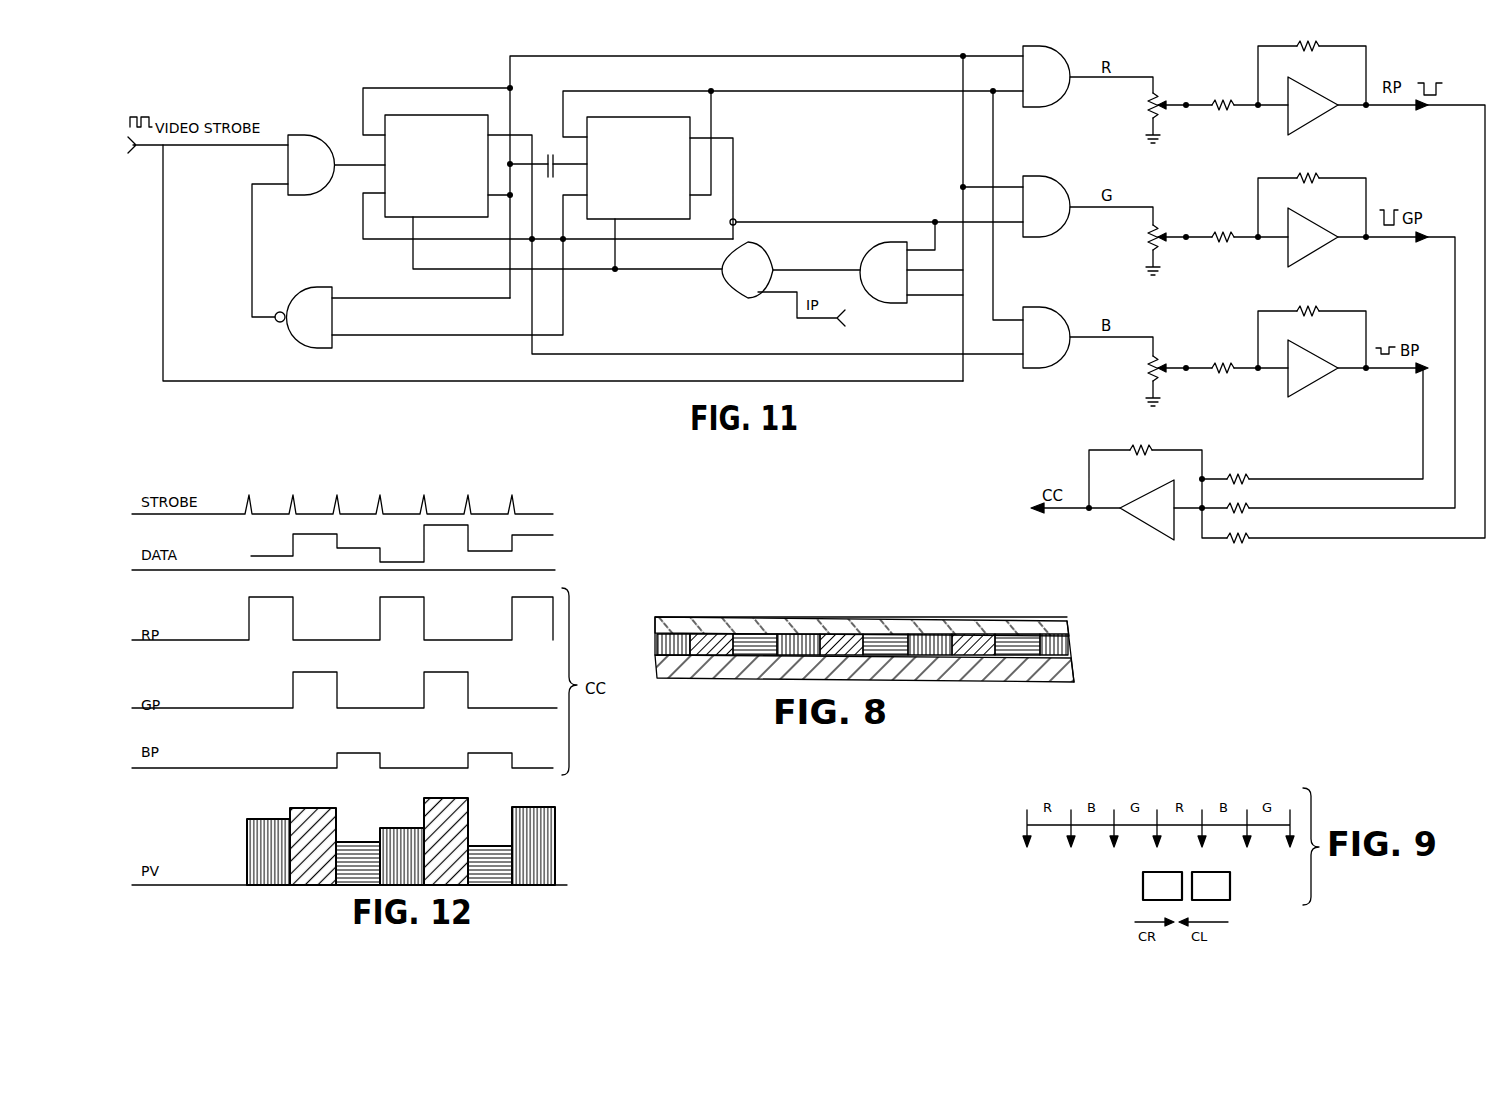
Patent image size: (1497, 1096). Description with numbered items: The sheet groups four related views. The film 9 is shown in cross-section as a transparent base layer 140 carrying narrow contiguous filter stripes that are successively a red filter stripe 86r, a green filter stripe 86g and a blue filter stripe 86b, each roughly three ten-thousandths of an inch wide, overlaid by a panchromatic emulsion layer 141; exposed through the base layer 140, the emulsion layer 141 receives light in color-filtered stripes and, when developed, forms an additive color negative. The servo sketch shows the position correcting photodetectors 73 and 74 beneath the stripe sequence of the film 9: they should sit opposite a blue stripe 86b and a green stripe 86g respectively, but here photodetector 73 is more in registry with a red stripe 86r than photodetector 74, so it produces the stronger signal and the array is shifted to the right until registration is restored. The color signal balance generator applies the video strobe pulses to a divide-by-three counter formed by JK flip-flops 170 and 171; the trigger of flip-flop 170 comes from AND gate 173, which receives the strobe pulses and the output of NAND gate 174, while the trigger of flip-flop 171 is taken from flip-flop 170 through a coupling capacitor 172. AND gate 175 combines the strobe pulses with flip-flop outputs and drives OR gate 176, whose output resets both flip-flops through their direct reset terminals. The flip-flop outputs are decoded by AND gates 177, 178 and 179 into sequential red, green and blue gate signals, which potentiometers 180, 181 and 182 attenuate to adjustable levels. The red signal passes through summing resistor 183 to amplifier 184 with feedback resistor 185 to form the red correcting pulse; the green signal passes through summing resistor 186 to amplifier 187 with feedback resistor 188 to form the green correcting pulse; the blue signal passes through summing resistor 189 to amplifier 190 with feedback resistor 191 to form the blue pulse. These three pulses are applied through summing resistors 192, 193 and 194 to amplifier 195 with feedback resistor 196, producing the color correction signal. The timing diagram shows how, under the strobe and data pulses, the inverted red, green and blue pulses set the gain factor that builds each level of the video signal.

In FIG. 8, the film 9 is at (699, 608).
In FIG. 9, the film 9 is at (1253, 790).
In FIG. 8, the red filter stripe 86r is at (792, 634).
In FIG. 9, the red filter stripe 86r is at (1062, 813).
In FIG. 8, the green filter stripe 86g is at (840, 634).
In FIG. 9, the green filter stripe 86g is at (1150, 815).
In FIG. 8, the blue filter stripe 86b is at (888, 634).
In FIG. 9, the blue filter stripe 86b is at (1108, 815).
In FIG. 8, the transparent base layer 140 is at (1032, 673).
In FIG. 8, the panchromatic emulsion layer 141 is at (1016, 622).
In FIG. 9, the position correcting photodetector 73 is at (1143, 882).
In FIG. 9, the position correcting photodetector 74 is at (1220, 893).
In FIG. 11, the first JK flip-flop 170 is at (432, 115).
In FIG. 11, the second JK flip-flop 171 is at (628, 117).
In FIG. 11, the coupling capacitor 172 is at (549, 155).
In FIG. 11, the AND gate 173 is at (316, 133).
In FIG. 11, the NAND gate 174 is at (320, 287).
In FIG. 11, the AND gate 175 is at (863, 258).
In FIG. 11, the OR gate 176 is at (748, 291).
In FIG. 11, the AND gate 177 is at (1062, 63).
In FIG. 11, the AND gate 178 is at (1057, 193).
In FIG. 11, the AND gate 179 is at (1060, 322).
In FIG. 11, the potentiometer 180 is at (1160, 103).
In FIG. 11, the potentiometer 181 is at (1160, 235).
In FIG. 11, the potentiometer 182 is at (1160, 366).
In FIG. 11, the summing resistor 183 is at (1223, 113).
In FIG. 11, the amplifier 184 is at (1322, 115).
In FIG. 11, the feedback resistor 185 is at (1323, 44).
In FIG. 11, the summing resistor 186 is at (1226, 245).
In FIG. 11, the amplifier 187 is at (1318, 250).
In FIG. 11, the feedback resistor 188 is at (1310, 176).
In FIG. 11, the summing resistor 189 is at (1228, 374).
In FIG. 11, the amplifier 190 is at (1318, 380).
In FIG. 11, the feedback resistor 191 is at (1300, 305).
In FIG. 11, the summing resistor 192 is at (1238, 476).
In FIG. 11, the summing resistor 193 is at (1248, 505).
In FIG. 11, the summing resistor 194 is at (1248, 535).
In FIG. 11, the amplifier 195 is at (1155, 522).
In FIG. 11, the feedback resistor 196 is at (1133, 445).